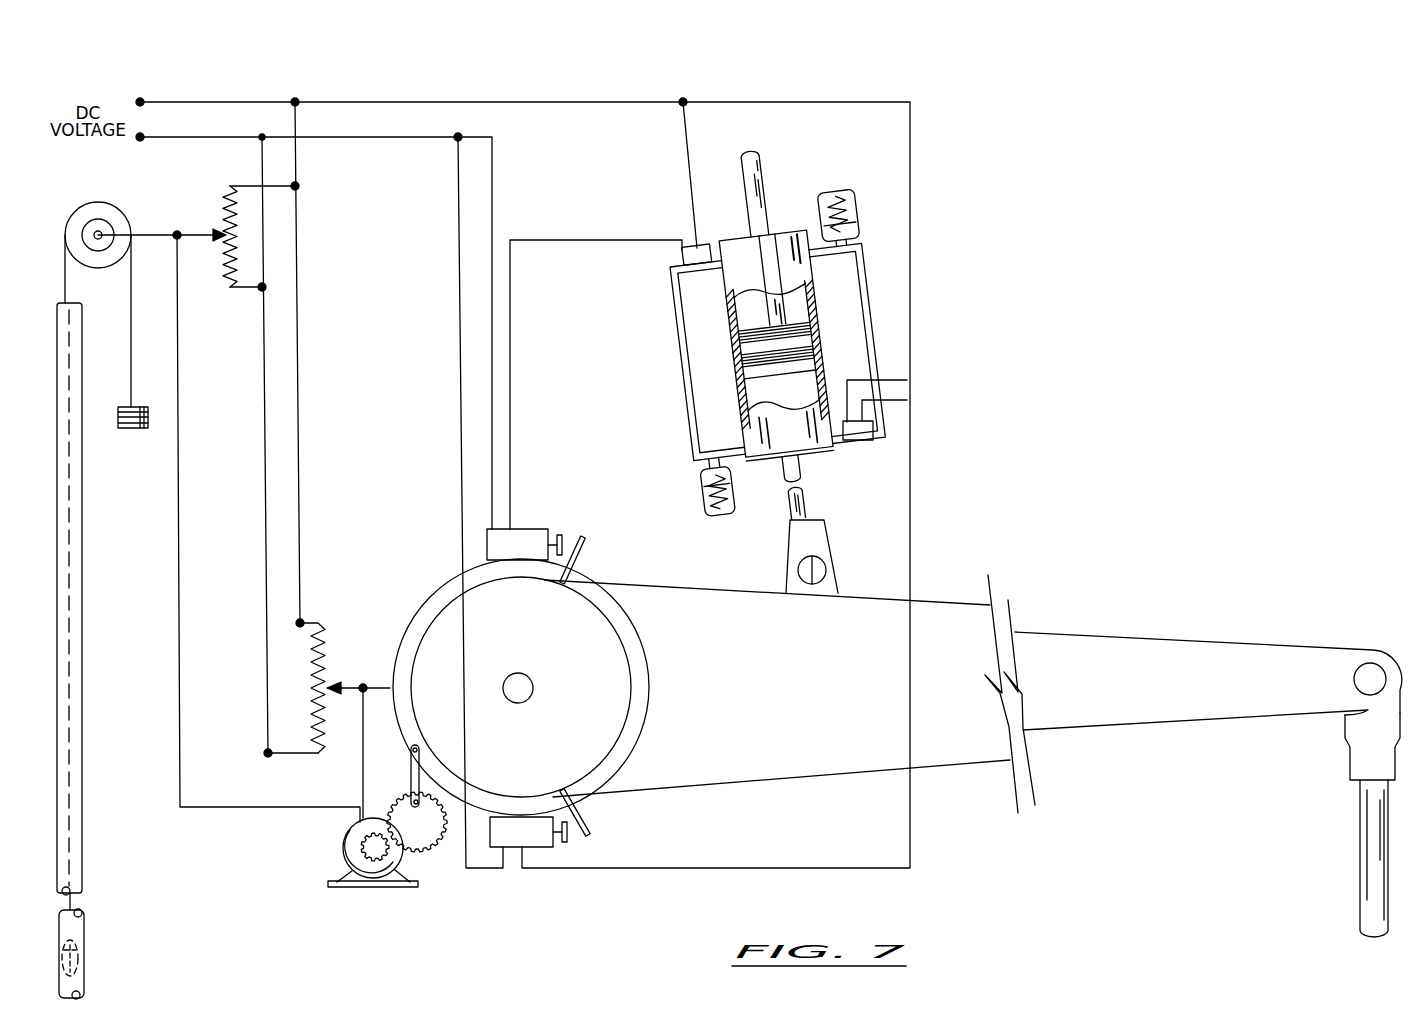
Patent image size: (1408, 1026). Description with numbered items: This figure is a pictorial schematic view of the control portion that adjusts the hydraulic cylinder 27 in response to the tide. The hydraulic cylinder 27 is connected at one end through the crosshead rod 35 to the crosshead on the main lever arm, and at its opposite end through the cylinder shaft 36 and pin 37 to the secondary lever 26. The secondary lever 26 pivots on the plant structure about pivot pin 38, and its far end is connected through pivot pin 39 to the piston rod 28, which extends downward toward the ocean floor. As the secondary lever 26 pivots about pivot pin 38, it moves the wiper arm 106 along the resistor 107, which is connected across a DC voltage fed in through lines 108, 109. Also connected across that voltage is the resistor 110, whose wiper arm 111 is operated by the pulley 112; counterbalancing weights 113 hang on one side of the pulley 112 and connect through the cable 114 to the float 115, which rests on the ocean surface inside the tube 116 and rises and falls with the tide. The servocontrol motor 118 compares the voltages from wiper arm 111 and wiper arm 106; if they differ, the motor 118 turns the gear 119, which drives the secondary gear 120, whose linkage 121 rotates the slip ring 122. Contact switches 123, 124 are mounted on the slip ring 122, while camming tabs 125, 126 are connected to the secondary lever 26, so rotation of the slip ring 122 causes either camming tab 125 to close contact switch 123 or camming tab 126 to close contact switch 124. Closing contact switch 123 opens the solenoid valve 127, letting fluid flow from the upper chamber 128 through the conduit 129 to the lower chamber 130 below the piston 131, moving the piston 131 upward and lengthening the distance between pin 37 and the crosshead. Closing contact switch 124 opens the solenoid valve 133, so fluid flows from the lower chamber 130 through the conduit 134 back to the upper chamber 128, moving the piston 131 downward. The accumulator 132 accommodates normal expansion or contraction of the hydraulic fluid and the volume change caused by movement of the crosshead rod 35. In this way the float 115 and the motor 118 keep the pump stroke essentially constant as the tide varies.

The secondary lever 26 is at (1098, 634).
The hydraulic cylinder 27 is at (722, 339).
The piston rod 28 is at (1360, 870).
The crosshead rod 35 is at (766, 182).
The cylinder shaft 36 is at (810, 497).
The pin 37 is at (826, 570).
The pivot pin 38 is at (533, 686).
The pivot pin 39 is at (1370, 663).
The wiper arm 106 is at (350, 684).
The resistor 107 is at (330, 640).
The line 108 is at (420, 102).
The line 109 is at (397, 137).
The resistor 110 is at (226, 262).
The wiper arm 111 is at (190, 230).
The pulley 112 is at (107, 202).
The counterbalancing weights 113 is at (131, 430).
The cable 114 is at (72, 291).
The float 115 is at (80, 938).
The tube 116 is at (88, 715).
The motor 118 is at (348, 840).
The gear 119 is at (362, 853).
The secondary gear 120 is at (428, 854).
The linkage 121 is at (410, 773).
The slip ring 122 is at (422, 604).
The contact switch 123 is at (532, 528).
The contact switch 124 is at (553, 848).
The camming tab 125 is at (586, 552).
The camming tab 126 is at (591, 818).
The solenoid valve 127 is at (682, 255).
The upper chamber 128 is at (805, 298).
The conduit 129 is at (682, 385).
The lower chamber 130 is at (765, 389).
The piston 131 is at (748, 355).
The accumulator 132 is at (840, 191).
The solenoid valve 133 is at (860, 440).
The conduit 134 is at (868, 278).